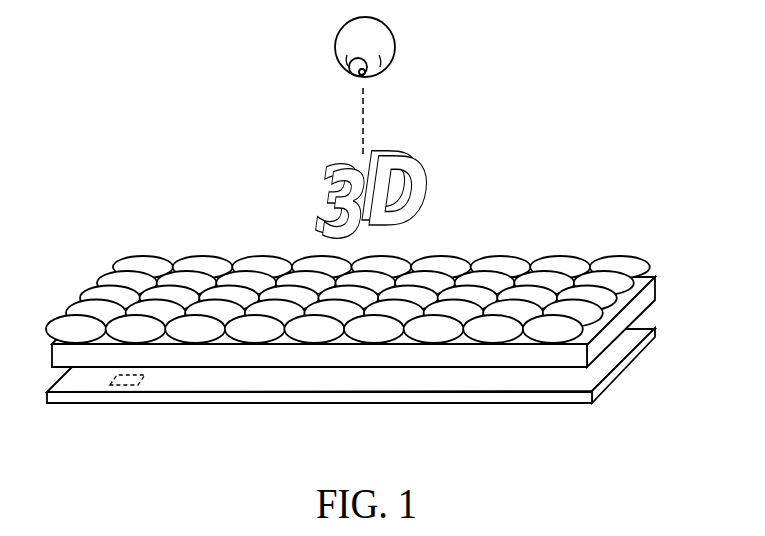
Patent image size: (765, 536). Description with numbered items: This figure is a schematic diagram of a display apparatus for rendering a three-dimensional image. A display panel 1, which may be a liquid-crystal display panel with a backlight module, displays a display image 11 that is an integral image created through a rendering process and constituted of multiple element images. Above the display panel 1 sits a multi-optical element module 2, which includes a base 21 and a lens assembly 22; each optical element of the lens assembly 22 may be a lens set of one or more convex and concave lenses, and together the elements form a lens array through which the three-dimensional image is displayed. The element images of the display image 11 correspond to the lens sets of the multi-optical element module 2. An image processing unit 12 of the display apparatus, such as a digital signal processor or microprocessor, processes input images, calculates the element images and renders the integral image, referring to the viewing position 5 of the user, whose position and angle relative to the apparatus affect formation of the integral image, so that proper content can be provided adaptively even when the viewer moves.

The display panel 1 is at (367, 396).
The display image 11 is at (510, 378).
The image processing unit 12 is at (127, 387).
The multi-optical element module 2 is at (382, 281).
The base 21 is at (638, 303).
The lens assembly 22 is at (620, 265).
The viewing position 5 is at (405, 33).